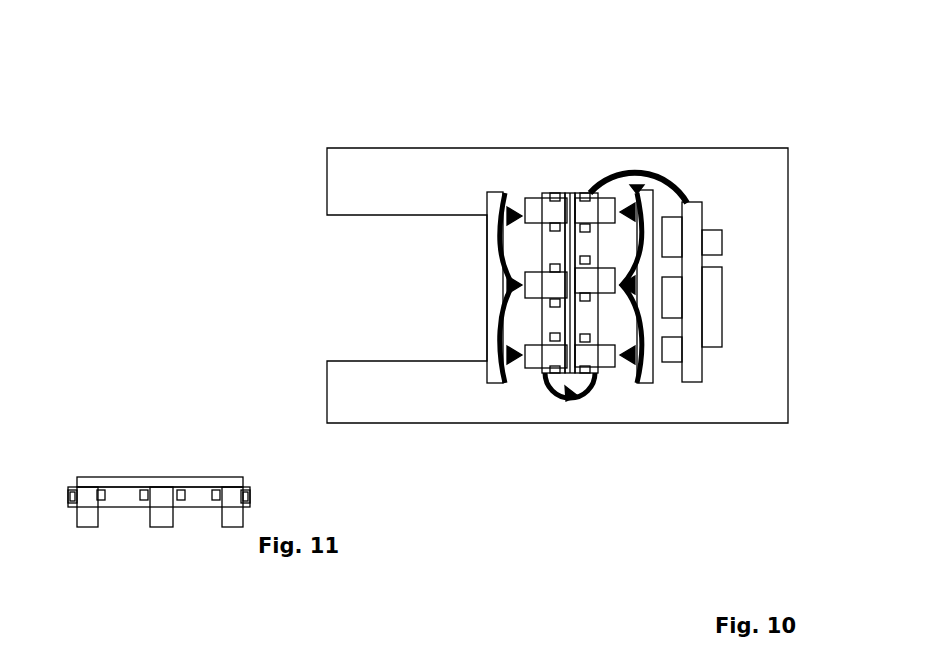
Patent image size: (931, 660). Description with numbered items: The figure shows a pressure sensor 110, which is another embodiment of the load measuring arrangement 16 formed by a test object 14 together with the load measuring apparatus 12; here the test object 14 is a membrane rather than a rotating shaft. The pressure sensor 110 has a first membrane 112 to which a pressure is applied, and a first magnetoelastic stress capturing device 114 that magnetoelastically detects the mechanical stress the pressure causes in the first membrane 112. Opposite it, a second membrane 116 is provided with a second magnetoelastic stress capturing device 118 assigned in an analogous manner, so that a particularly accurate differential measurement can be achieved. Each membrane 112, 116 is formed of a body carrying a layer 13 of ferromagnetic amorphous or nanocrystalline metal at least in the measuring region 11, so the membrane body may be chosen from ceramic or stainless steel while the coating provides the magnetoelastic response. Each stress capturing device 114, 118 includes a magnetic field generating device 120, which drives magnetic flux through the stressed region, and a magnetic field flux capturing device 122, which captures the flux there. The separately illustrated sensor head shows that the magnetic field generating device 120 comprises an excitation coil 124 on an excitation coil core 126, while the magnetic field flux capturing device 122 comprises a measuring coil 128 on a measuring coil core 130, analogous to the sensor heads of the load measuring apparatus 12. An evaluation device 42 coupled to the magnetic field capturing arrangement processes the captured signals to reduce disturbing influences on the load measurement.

In FIG. 10, the measuring region 11 is at (505, 190).
In FIG. 10, the load measuring apparatus 12 is at (565, 356).
In FIG. 11, the load measuring apparatus 12 is at (120, 445).
In FIG. 10, the layer of ferromagnetic amorphous or nanocrystalline metal 13 is at (560, 300).
In FIG. 10, the test object 14 is at (493, 220).
In FIG. 10, the load measuring arrangement 16 is at (796, 535).
In FIG. 10, the evaluation device 42 is at (720, 270).
In FIG. 10, the pressure sensor 110 is at (852, 401).
In FIG. 10, the first membrane 112 is at (487, 192).
In FIG. 10, the first magnetoelastic stress capturing device 114 is at (549, 400).
In FIG. 10, the second membrane 116 is at (647, 203).
In FIG. 10, the second magnetoelastic stress capturing device 118 is at (601, 392).
In FIG. 10, the magnetic field generating device 120 is at (507, 287).
In FIG. 10, the magnetic field flux capturing device 122 is at (537, 200).
In FIG. 10, the excitation coil 124 is at (555, 310).
In FIG. 11, the excitation coil 124 is at (181, 500).
In FIG. 11, the excitation coil core 126 is at (160, 520).
In FIG. 10, the measuring coil 128 is at (563, 193).
In FIG. 11, the measuring coil 128 is at (70, 490).
In FIG. 11, the measuring coil core 130 is at (87, 520).